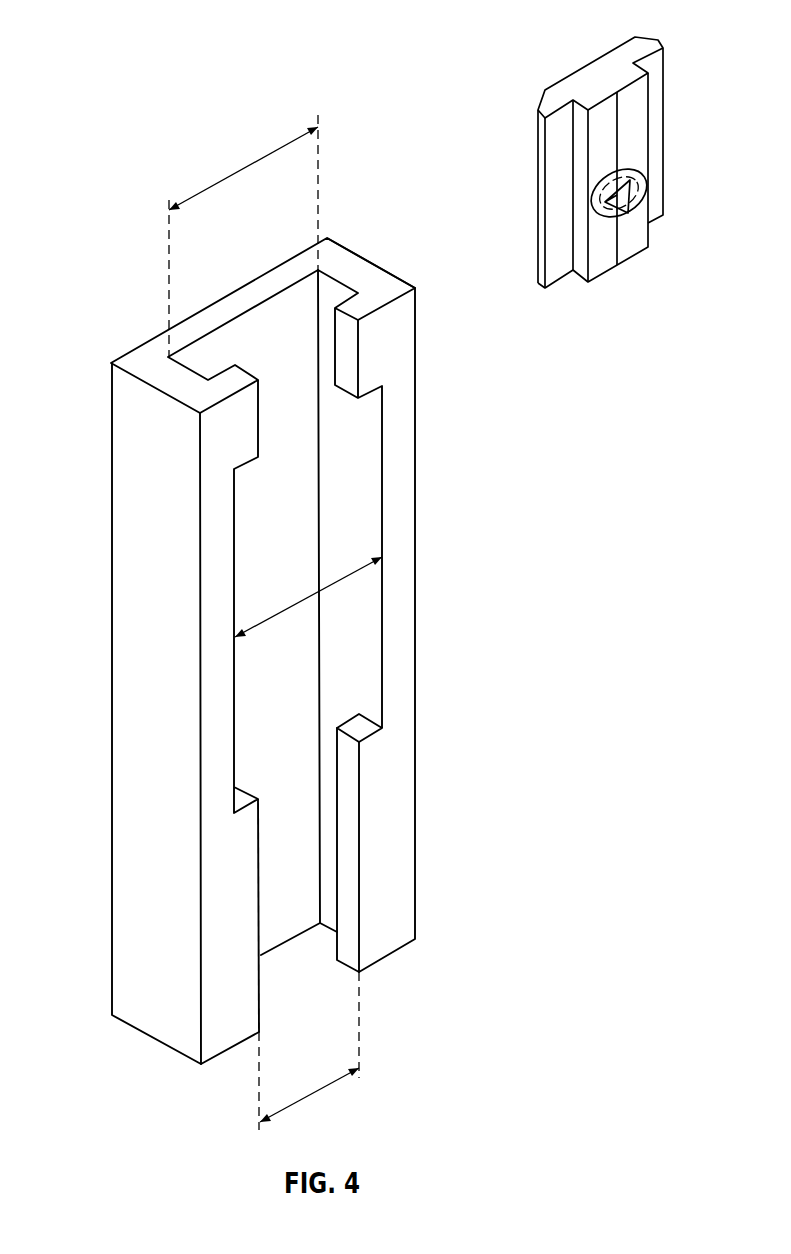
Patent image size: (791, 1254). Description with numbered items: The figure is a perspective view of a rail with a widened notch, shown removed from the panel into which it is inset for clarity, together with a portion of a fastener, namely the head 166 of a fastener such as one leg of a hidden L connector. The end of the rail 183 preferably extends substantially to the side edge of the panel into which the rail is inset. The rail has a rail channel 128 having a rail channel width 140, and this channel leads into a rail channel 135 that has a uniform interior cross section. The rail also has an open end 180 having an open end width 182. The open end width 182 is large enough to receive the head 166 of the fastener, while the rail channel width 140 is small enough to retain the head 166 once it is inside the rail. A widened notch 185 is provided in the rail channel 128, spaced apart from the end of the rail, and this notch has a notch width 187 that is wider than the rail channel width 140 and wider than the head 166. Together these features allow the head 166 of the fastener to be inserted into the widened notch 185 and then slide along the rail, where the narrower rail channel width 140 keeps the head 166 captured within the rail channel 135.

The open end 180 is at (267, 632).
The open end width 182 is at (242, 168).
The end of the rail 183 is at (355, 264).
The widened notch 185 is at (247, 695).
The notch width 187 is at (302, 600).
The rail channel 128 is at (355, 779).
The rail channel 135 is at (292, 860).
The rail channel width 140 is at (309, 1096).
The head 166 is at (598, 72).